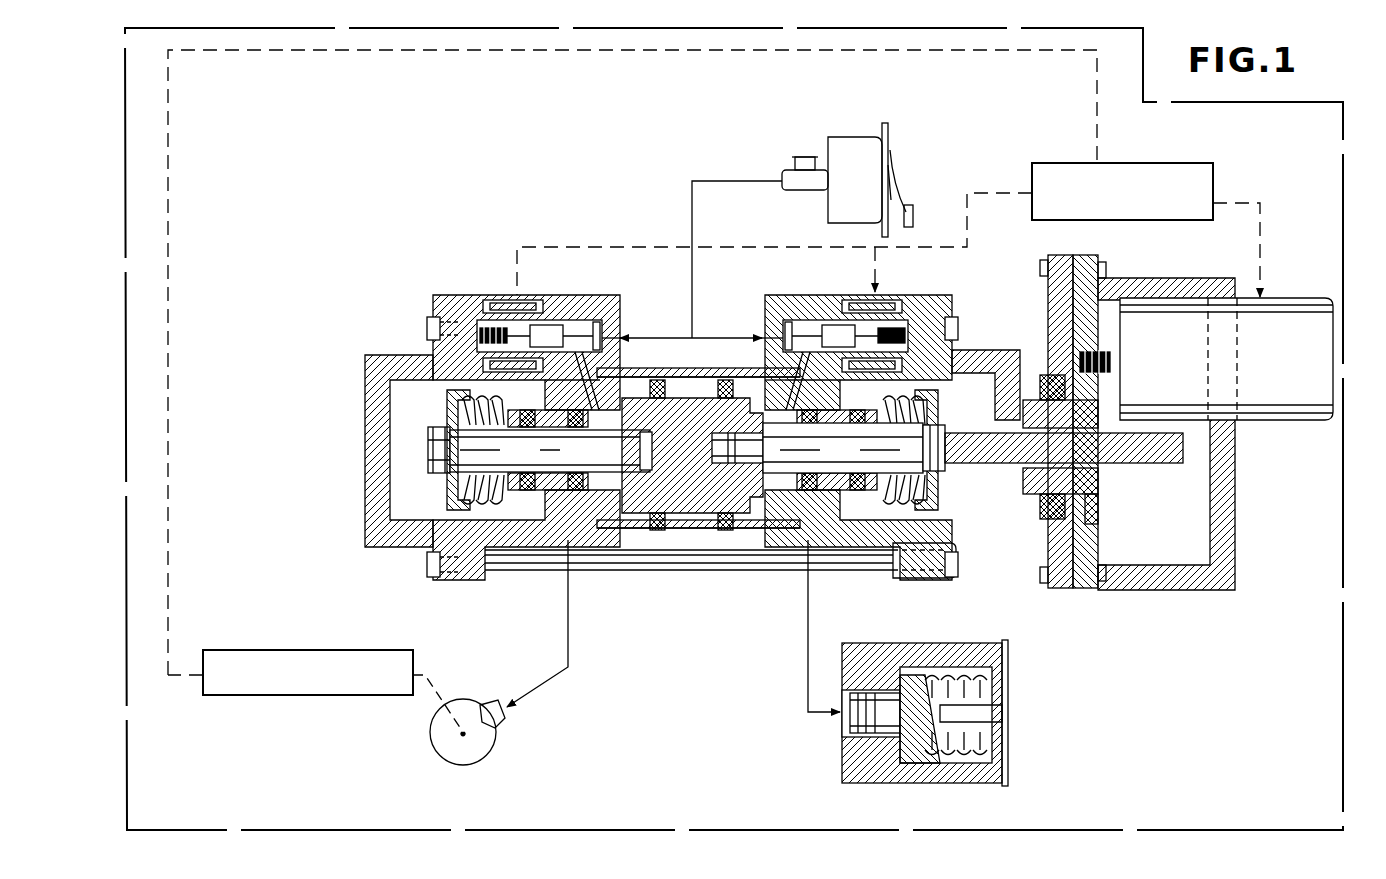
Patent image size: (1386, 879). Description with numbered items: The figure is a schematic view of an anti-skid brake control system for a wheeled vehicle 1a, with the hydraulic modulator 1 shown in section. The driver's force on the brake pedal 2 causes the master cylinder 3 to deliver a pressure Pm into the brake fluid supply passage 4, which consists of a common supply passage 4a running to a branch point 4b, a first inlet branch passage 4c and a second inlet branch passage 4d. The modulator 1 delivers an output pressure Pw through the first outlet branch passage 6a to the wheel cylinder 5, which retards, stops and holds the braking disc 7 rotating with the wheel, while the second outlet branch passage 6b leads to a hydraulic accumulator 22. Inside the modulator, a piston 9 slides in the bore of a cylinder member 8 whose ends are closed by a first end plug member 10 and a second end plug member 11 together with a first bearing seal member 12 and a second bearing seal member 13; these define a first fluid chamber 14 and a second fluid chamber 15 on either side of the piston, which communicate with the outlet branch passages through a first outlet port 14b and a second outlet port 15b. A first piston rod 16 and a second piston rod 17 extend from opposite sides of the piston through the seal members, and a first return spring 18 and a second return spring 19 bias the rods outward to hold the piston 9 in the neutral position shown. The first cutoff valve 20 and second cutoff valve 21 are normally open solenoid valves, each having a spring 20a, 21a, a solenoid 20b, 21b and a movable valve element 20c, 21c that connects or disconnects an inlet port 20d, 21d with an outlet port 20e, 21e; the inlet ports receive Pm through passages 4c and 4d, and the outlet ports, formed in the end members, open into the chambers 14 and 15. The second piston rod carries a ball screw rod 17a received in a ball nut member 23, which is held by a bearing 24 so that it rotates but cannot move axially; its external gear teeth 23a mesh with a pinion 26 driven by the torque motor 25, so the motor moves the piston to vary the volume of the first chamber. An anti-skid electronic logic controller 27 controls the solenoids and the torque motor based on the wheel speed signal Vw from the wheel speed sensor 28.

The anti-skid brake control modulator 1 is at (325, 402).
The wheeled vehicle 1a is at (1012, 28).
The brake pedal 2 is at (912, 212).
The master cylinder 3 is at (826, 170).
The brake fluid supply passage 4 is at (692, 214).
The common supply passage 4a is at (745, 183).
The branch point 4b is at (708, 336).
The first inlet branch passage 4c is at (662, 335).
The second inlet branch passage 4d is at (760, 336).
The wheel cylinder 5 is at (500, 722).
The first brake fluid outlet branch passage 6a is at (568, 631).
The second brake fluid outlet branch passage 6b is at (808, 670).
The braking disc 7 is at (440, 757).
The cylinder member 8 is at (682, 520).
The piston 9 is at (708, 520).
The first end plug member 10 is at (562, 545).
The second end plug member 11 is at (820, 545).
The first bearing seal member 12 is at (522, 545).
The second bearing seal member 13 is at (845, 545).
The first fluid chamber 14 is at (622, 527).
The first outlet port 14b is at (583, 542).
The second fluid chamber 15 is at (770, 527).
The second outlet port 15b is at (790, 545).
The first piston rod 16 is at (430, 448).
The second piston rod 17 is at (943, 472).
The ball screw rod 17a is at (1135, 460).
The first return spring 18 is at (487, 545).
The second return spring 19 is at (890, 545).
The first cutoff valve 20 is at (470, 290).
The spring 20a is at (483, 298).
The solenoid 20b is at (500, 298).
The movable valve element 20c is at (555, 300).
The inlet port 20d is at (617, 298).
The outlet port 20e is at (698, 435).
The second cutoff valve 21 is at (955, 290).
The spring 21a is at (950, 306).
The solenoid 21b is at (903, 300).
The movable valve element 21c is at (815, 300).
The inlet port 21d is at (755, 300).
The outlet port 21e is at (770, 360).
The hydraulic accumulator 22 is at (842, 757).
The ball nut member 23 is at (1087, 500).
The external gear teeth 23a is at (1087, 590).
The bearing 24 is at (1045, 527).
The torque motor 25 is at (1272, 420).
The pinion 26 is at (1080, 348).
The anti-skid electronic logic controller 27 is at (1140, 163).
The wheel speed sensor 28 is at (318, 650).